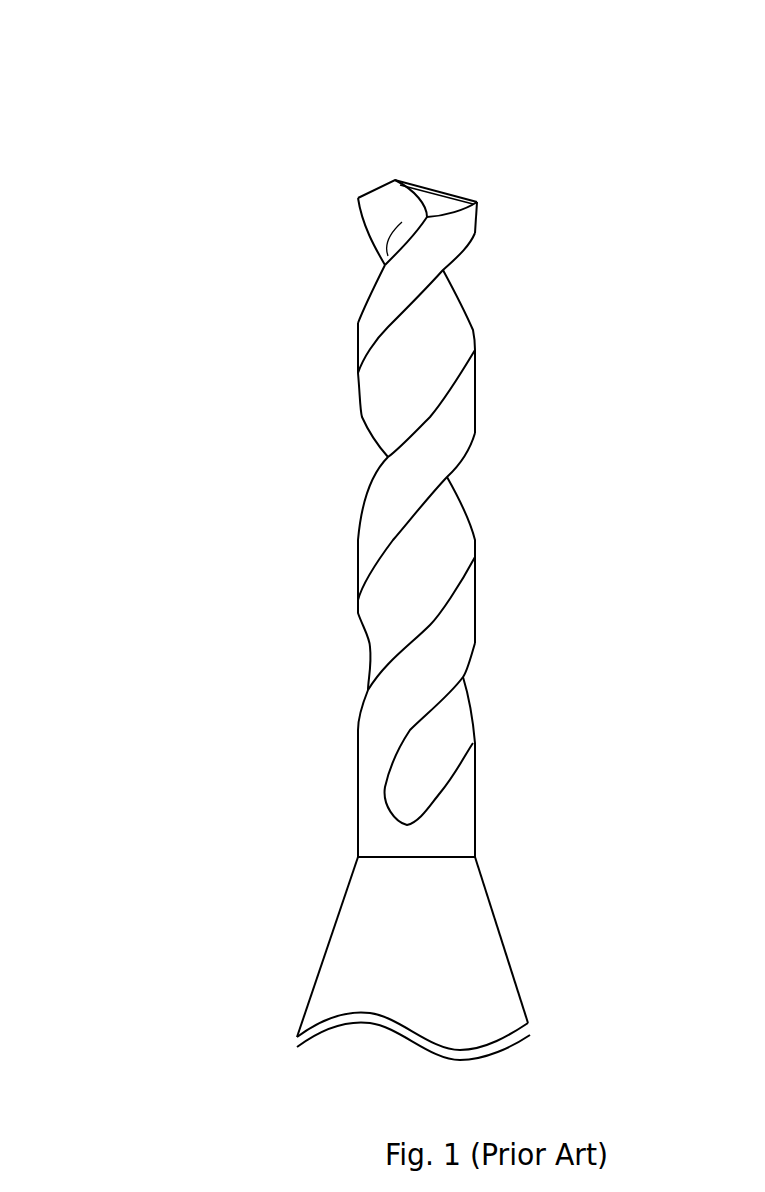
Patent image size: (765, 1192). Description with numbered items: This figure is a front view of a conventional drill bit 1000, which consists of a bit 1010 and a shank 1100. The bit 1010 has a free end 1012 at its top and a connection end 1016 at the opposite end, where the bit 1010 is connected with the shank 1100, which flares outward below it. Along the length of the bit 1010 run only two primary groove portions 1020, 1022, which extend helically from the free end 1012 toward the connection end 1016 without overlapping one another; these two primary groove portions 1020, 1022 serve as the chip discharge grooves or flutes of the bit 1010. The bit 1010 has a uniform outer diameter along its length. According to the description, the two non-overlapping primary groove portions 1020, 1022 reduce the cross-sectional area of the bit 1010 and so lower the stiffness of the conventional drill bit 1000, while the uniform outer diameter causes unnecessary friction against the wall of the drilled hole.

The conventional drill bit 1000 is at (140, 74).
The bit 1010 is at (163, 858).
The free end 1012 is at (417, 176).
The connection end 1016 is at (418, 858).
The primary groove portion 1020 is at (387, 257).
The primary groove portion 1022 is at (443, 340).
The shank 1100 is at (412, 940).